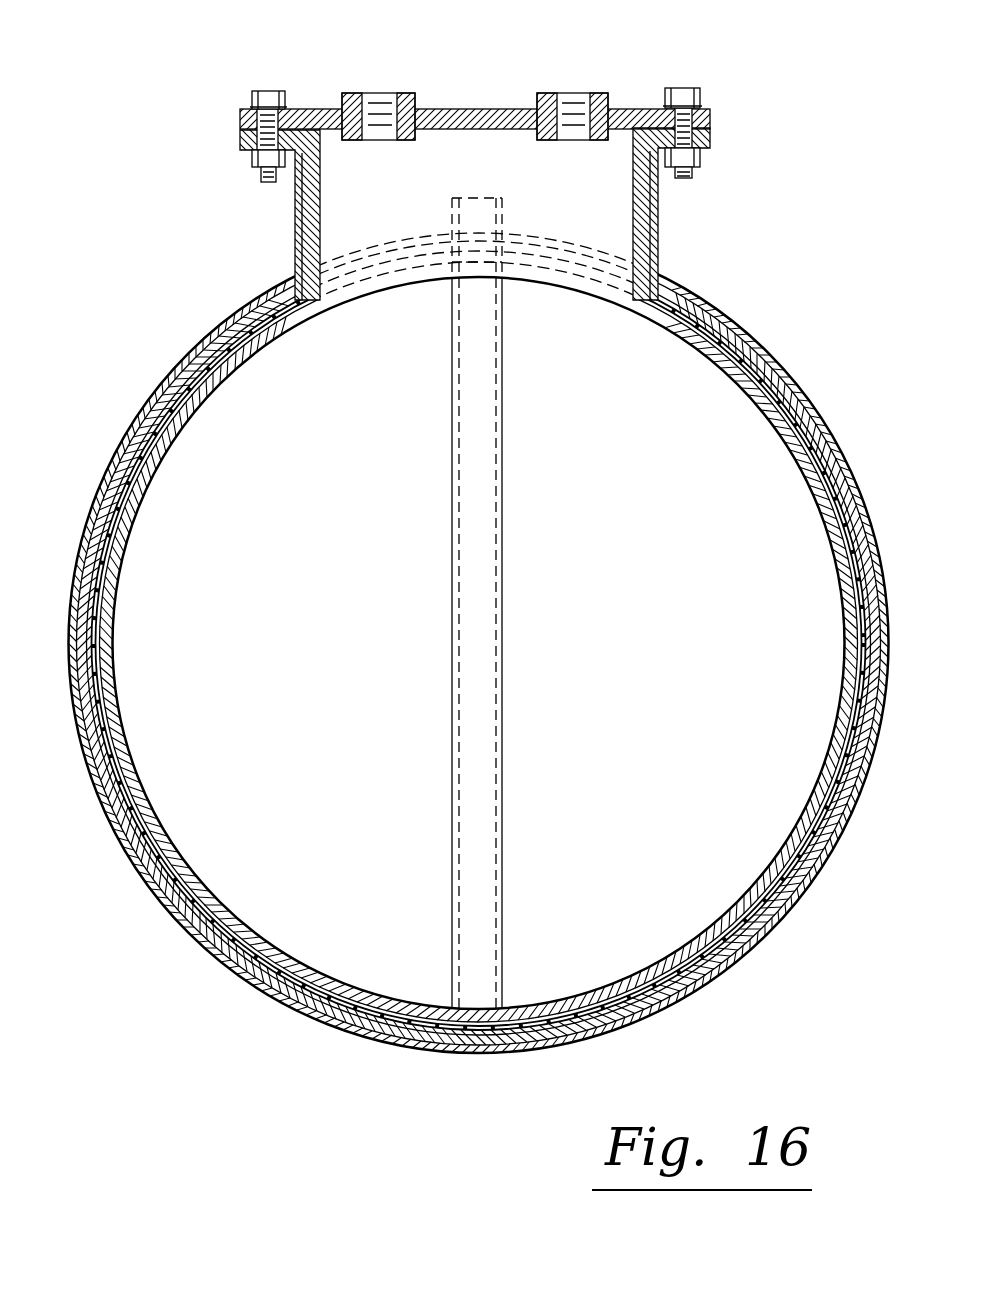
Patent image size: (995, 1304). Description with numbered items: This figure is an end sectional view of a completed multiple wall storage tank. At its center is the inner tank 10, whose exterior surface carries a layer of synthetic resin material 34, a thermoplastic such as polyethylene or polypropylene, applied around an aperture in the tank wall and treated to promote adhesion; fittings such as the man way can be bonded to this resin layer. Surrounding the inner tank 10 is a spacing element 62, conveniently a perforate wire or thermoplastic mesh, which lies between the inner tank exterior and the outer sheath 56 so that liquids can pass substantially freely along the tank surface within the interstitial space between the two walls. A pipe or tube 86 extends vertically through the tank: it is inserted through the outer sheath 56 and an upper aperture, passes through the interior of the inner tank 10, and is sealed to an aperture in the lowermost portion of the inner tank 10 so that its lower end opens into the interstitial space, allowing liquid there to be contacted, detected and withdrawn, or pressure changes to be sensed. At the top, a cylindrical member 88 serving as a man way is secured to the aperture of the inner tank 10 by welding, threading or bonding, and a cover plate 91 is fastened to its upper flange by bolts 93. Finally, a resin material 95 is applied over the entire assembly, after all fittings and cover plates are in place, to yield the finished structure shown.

The inner tank 10 is at (268, 337).
The synthetic resin material layer 34 is at (252, 323).
The outer sheath 56 is at (155, 398).
The spacing element 62 is at (148, 455).
The pipe or tube 86 is at (490, 728).
The cylindrical member 88 is at (660, 232).
The cover plate 91 is at (470, 110).
The bolts 93 is at (272, 92).
The resin material 95 is at (795, 385).